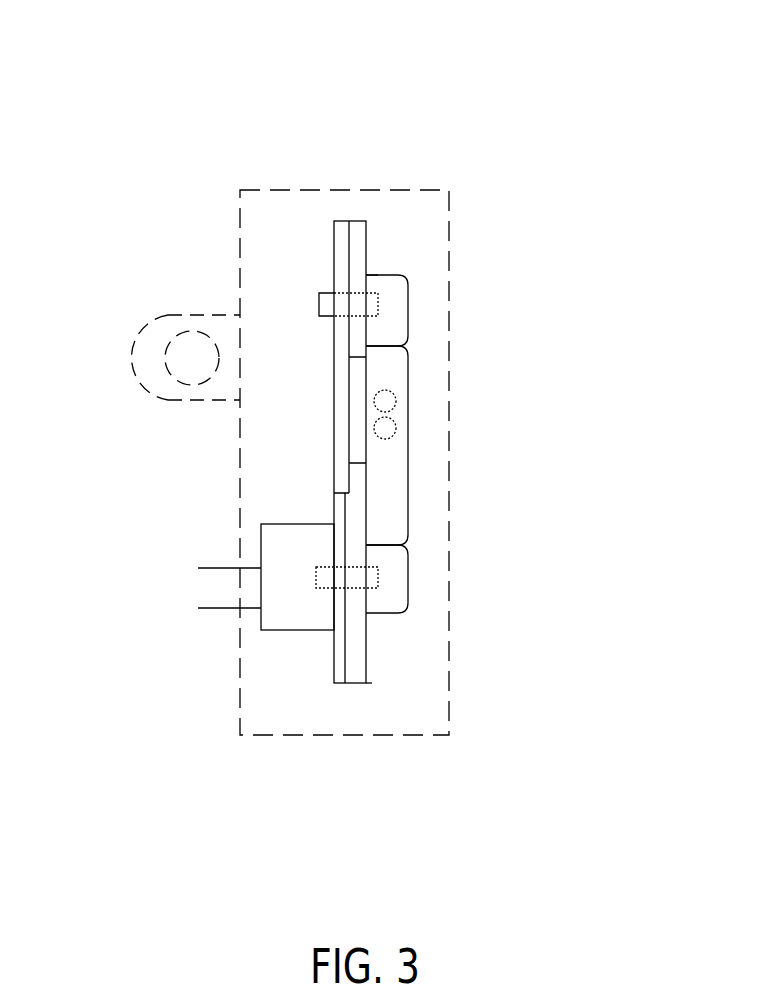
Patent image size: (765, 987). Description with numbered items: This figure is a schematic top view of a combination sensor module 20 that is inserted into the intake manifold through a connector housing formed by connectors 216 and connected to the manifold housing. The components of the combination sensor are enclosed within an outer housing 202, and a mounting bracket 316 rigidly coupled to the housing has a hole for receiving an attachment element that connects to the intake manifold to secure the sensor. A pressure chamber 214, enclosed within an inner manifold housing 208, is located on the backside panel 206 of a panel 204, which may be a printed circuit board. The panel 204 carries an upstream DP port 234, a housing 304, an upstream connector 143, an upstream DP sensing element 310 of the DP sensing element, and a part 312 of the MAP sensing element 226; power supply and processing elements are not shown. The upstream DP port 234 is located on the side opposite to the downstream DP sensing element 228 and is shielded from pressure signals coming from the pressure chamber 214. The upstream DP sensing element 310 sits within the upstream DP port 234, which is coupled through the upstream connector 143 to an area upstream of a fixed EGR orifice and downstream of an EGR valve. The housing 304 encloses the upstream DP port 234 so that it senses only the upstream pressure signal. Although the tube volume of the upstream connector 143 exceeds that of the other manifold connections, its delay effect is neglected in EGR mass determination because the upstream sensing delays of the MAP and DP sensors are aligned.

The combination sensor module 20 is at (580, 52).
The outer housing 202 is at (433, 188).
The panel 204 is at (334, 247).
The backside panel 206 is at (372, 684).
The inner manifold housing 208 is at (408, 327).
The pressure chamber 214 is at (397, 317).
The connectors 216 is at (398, 412).
The MAP sensing element 226 is at (379, 278).
The downstream DP sensing element 228 is at (378, 568).
The upstream DP port 234 is at (312, 655).
The upstream connector 143 is at (218, 566).
The housing 304 is at (282, 632).
The upstream DP sensing element 310 is at (327, 566).
The part of the MAP sensing element 312 is at (322, 292).
The mounting bracket 316 is at (160, 320).